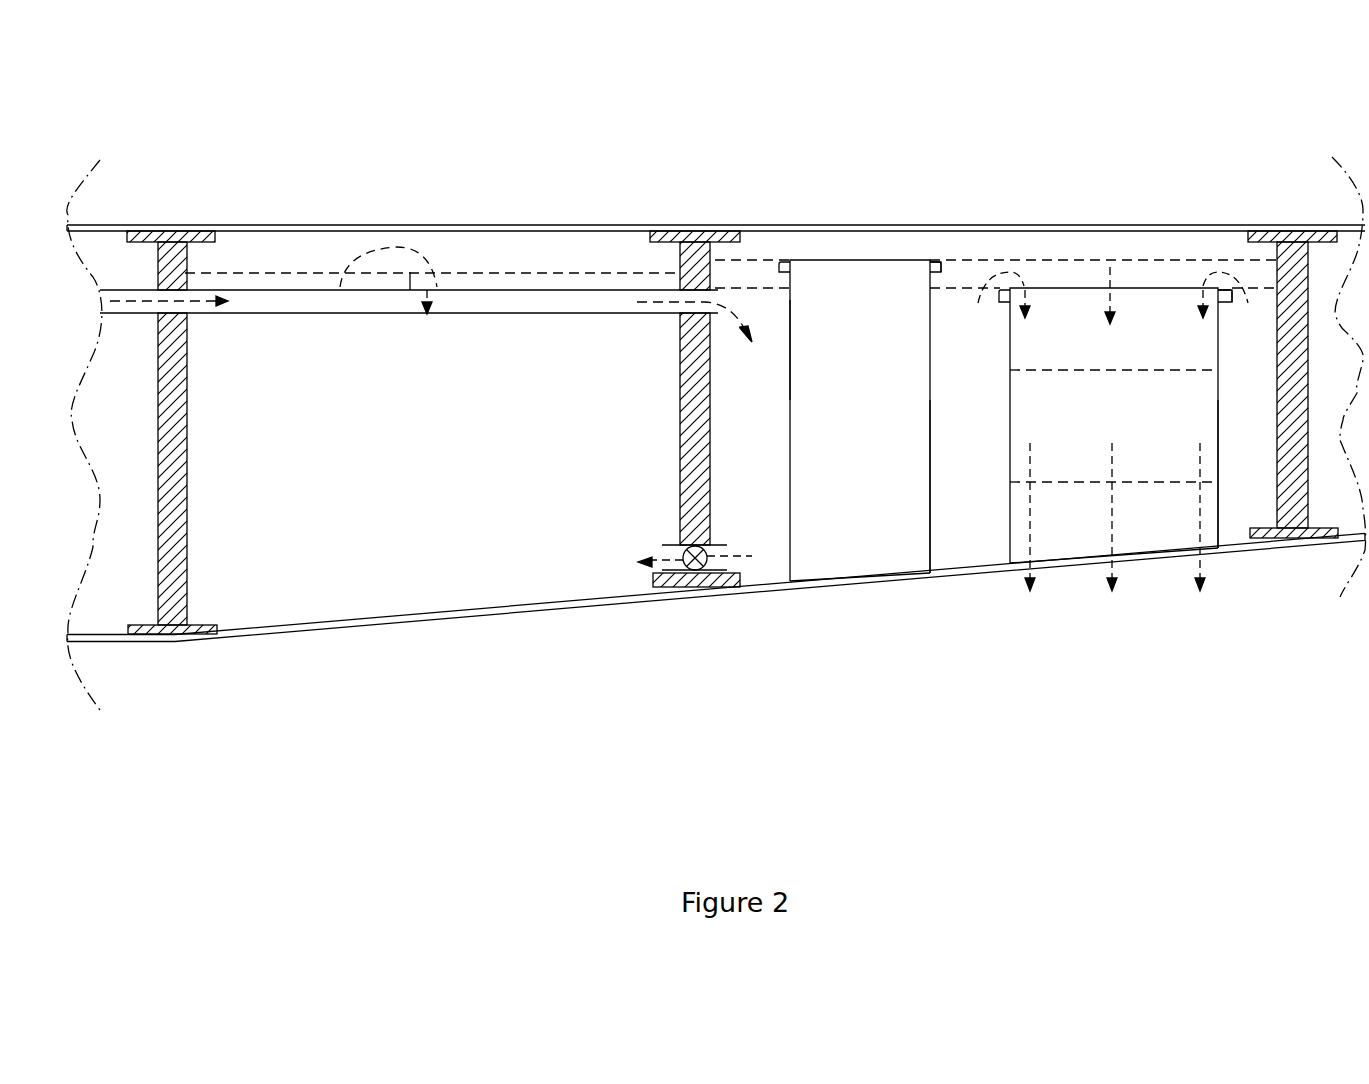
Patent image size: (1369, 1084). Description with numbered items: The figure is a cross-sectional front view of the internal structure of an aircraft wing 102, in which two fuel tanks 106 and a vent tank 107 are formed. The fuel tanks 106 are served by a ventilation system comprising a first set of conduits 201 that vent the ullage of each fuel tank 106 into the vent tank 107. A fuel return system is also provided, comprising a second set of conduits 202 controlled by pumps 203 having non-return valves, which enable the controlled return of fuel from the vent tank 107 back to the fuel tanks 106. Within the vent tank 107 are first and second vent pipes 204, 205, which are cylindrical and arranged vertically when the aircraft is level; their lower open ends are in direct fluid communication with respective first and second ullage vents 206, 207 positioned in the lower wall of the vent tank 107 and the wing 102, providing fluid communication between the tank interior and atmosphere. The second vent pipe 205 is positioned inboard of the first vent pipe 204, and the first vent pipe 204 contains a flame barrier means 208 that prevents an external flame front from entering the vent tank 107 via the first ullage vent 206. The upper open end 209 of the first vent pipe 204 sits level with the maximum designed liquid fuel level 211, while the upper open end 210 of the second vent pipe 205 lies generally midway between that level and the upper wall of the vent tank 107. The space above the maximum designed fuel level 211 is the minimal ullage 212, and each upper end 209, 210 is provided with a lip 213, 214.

The wing 102 is at (422, 620).
The fuel tank 106 is at (98, 245).
The vent tank 107 is at (743, 453).
The first set of conduits 201 is at (228, 292).
The second set of conduits 202 is at (658, 572).
The pump 203 is at (687, 586).
The first vent pipe 204 is at (1218, 505).
The second vent pipe 205 is at (932, 533).
The first ullage vent 206 is at (1072, 567).
The second ullage vent 207 is at (878, 577).
The flame barrier means 208 is at (1133, 482).
The upper open end of the first vent pipe 209 is at (1185, 285).
The upper open end of the second vent pipe 210 is at (890, 258).
The maximum designed liquid fuel level 211 is at (793, 258).
The minimal ullage 212 is at (1031, 240).
The lip 213 is at (1227, 287).
The lip 214 is at (933, 258).